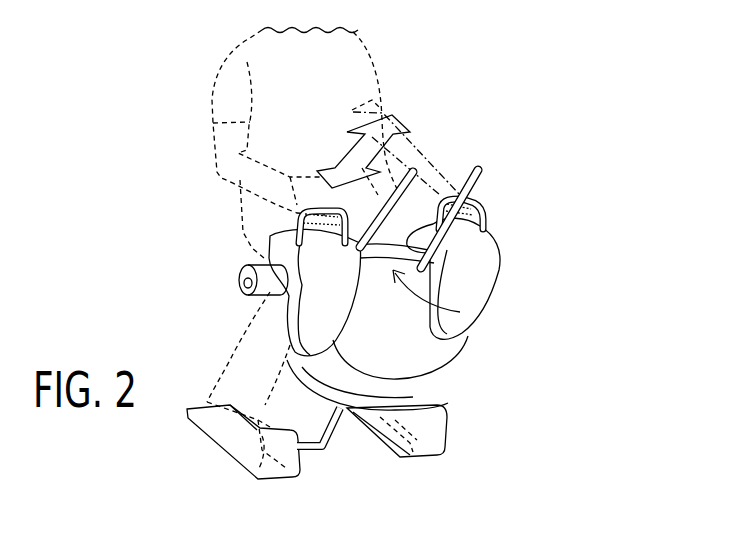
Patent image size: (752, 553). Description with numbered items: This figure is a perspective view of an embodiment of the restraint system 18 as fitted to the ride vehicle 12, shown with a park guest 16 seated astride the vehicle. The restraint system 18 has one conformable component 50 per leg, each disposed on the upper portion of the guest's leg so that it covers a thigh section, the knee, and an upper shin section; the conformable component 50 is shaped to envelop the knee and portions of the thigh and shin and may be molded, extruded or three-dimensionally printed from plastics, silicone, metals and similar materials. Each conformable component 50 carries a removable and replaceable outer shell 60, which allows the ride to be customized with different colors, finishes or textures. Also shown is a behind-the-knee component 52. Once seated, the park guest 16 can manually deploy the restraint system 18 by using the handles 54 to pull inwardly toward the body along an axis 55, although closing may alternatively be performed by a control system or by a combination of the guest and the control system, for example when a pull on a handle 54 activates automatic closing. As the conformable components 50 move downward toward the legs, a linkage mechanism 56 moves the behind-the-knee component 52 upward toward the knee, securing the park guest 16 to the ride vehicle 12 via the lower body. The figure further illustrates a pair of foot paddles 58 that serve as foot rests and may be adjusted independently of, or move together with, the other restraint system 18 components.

The ride vehicle 12 is at (393, 354).
The park guest 16 is at (244, 44).
The restraint system 18 is at (544, 258).
The conformable component 50 is at (270, 255).
The behind-the-knee component 52 is at (240, 288).
The handle 54 is at (296, 214).
The axis 55 is at (396, 114).
The linkage mechanism 56 is at (460, 312).
The foot paddle 58 is at (238, 468).
The outer shell 60 is at (357, 250).